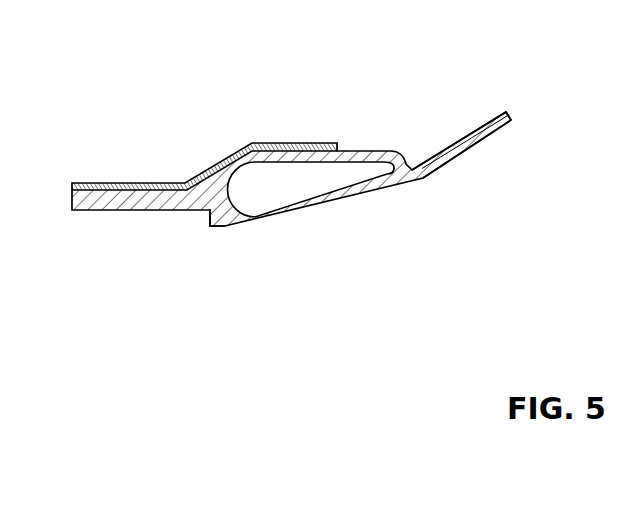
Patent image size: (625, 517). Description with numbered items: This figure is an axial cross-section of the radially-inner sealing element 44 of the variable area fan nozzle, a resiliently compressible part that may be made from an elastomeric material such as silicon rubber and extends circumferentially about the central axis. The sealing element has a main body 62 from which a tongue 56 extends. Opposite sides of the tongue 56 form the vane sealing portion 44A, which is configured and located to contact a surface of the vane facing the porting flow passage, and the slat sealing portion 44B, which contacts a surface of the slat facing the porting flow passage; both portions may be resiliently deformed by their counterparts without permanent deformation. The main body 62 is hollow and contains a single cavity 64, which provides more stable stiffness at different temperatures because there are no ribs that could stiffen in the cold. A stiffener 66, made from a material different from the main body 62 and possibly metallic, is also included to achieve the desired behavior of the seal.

The radially-inner sealing element 44 is at (212, 80).
The vane sealing portion 44A is at (480, 143).
The slat sealing portion 44B is at (477, 130).
The tongue 56 is at (507, 112).
The main body 62 is at (223, 226).
The hollow cavity 64 is at (296, 201).
The stiffener 66 is at (220, 162).